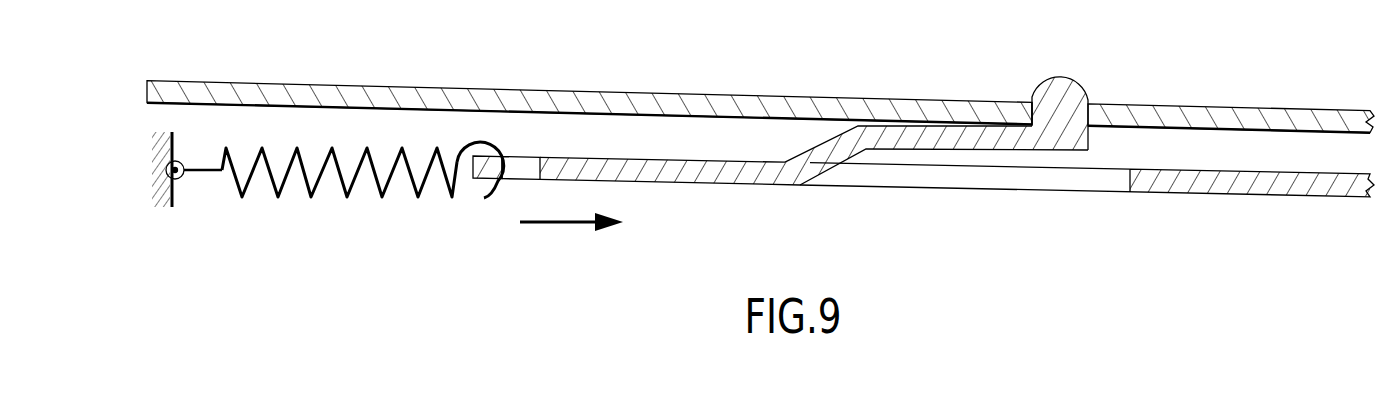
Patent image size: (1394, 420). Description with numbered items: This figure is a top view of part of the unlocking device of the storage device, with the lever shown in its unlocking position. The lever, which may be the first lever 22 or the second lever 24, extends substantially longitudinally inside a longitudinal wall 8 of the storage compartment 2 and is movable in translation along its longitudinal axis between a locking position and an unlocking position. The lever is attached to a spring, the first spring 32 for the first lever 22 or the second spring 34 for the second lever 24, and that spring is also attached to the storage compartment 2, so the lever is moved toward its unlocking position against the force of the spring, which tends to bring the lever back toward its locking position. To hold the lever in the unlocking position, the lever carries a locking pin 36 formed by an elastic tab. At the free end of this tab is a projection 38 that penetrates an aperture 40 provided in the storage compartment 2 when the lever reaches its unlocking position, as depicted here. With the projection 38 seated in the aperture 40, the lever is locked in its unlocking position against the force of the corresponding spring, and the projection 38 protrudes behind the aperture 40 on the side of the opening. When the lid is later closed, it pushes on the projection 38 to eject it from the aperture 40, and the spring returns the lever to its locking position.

The storage compartment 2 is at (444, 92).
The longitudinal wall 8 is at (708, 97).
The first lever 22 is at (923, 171).
The second lever 24 is at (487, 167).
The first spring 32 is at (363, 215).
The second spring 34 is at (480, 170).
The locking pin 36 is at (922, 124).
The projection 38 is at (1082, 85).
The aperture 40 is at (1030, 110).